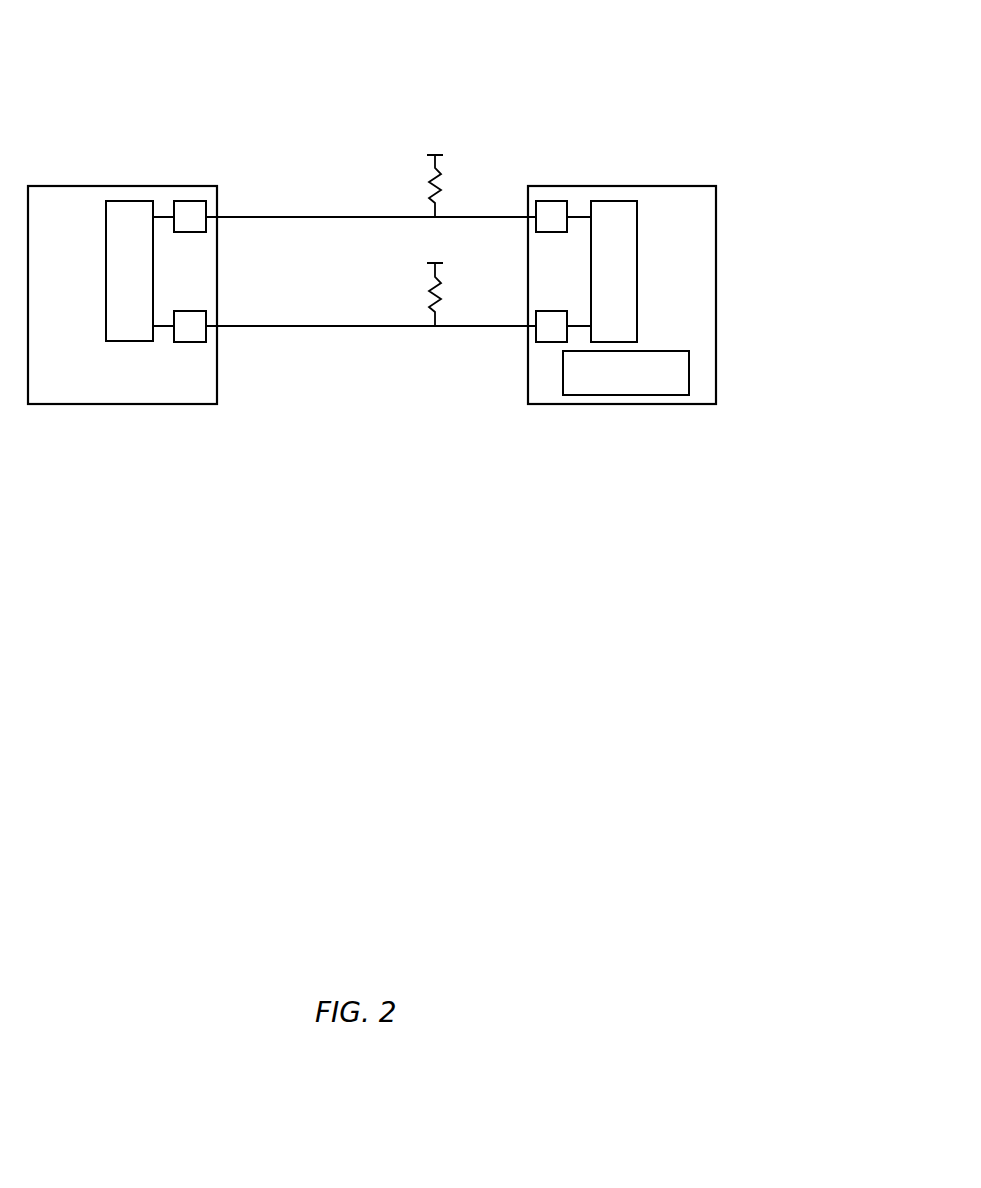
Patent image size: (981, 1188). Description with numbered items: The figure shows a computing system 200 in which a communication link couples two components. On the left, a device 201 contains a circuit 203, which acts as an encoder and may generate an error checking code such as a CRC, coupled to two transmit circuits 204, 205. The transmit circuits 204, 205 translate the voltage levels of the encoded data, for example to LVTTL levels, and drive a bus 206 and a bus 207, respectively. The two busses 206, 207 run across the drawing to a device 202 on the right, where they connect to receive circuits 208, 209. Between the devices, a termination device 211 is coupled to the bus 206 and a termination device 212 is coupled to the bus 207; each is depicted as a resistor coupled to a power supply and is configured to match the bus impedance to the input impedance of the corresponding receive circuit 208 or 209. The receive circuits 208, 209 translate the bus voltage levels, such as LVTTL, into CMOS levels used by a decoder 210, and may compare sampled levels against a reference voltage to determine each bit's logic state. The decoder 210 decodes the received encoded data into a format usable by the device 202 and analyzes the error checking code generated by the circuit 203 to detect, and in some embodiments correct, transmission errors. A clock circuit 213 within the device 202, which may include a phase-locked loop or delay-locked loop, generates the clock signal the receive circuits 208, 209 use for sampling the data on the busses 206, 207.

The computing system 200 is at (597, 91).
The device 201 is at (172, 186).
The device 202 is at (575, 186).
The circuit 203 is at (140, 271).
The transmit circuit 204 is at (206, 209).
The transmit circuit 205 is at (206, 339).
The bus 206 is at (288, 216).
The bus 207 is at (288, 325).
The receive circuit 208 is at (536, 204).
The receive circuit 209 is at (536, 340).
The decoder 210 is at (602, 271).
The termination device 211 is at (443, 175).
The termination device 212 is at (443, 285).
The clock circuit 213 is at (626, 373).